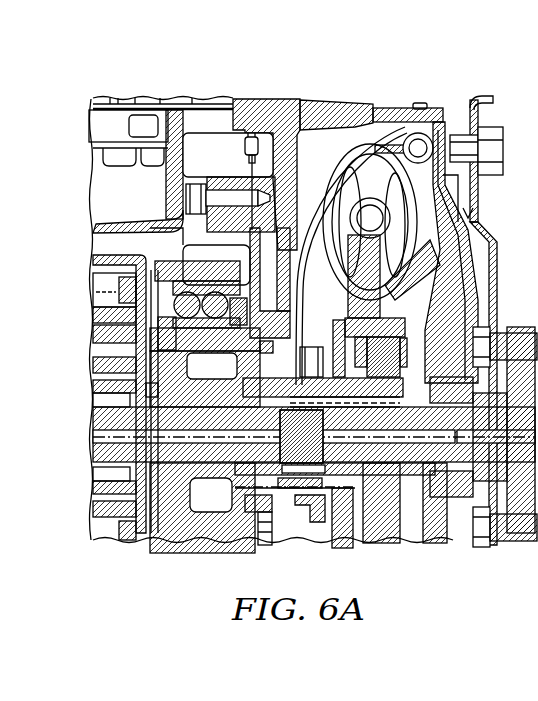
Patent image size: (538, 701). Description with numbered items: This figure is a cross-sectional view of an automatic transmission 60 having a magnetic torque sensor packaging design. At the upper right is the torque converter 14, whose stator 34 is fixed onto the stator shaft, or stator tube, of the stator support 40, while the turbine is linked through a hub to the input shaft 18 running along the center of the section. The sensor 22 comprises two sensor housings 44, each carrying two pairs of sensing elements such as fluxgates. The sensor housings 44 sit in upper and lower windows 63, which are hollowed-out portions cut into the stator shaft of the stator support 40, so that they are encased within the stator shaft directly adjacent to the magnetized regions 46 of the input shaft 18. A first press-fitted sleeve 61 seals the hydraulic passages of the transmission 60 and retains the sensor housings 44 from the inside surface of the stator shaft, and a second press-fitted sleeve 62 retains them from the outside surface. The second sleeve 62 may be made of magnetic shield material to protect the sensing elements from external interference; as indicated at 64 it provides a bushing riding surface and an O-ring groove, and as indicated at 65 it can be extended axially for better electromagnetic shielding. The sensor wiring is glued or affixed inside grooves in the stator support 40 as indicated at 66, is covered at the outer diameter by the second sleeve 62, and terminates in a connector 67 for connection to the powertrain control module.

The torque converter 14 is at (350, 135).
The input shaft 18 is at (425, 451).
The sensor 22 is at (330, 421).
The stator 34 is at (400, 290).
The stator support 40 is at (186, 222).
The sensor housing 44 is at (313, 476).
The magnetized regions 46 is at (232, 493).
The automatic transmission 60 is at (251, 78).
The first press-fitted sleeve 61 is at (280, 426).
The second press-fitted sleeve 62 is at (279, 478).
The window 63 is at (351, 368).
The bushing riding surface and O-ring groove 64 is at (300, 393).
The axial extension of second sleeve 65 is at (363, 485).
The wiring grooves 66 is at (130, 367).
The connector 67 is at (244, 148).